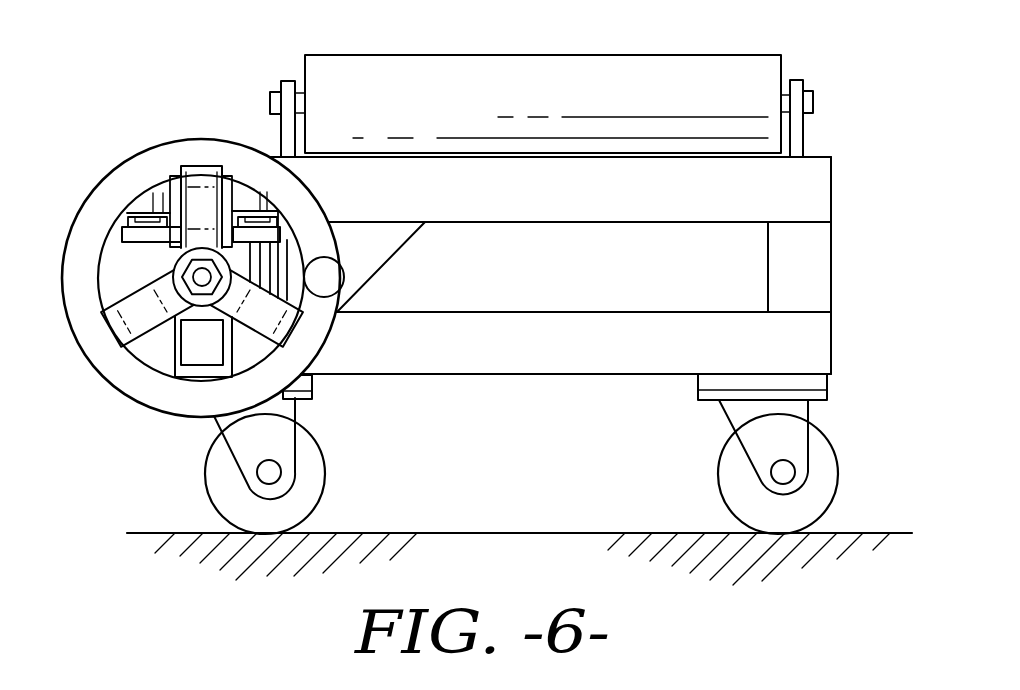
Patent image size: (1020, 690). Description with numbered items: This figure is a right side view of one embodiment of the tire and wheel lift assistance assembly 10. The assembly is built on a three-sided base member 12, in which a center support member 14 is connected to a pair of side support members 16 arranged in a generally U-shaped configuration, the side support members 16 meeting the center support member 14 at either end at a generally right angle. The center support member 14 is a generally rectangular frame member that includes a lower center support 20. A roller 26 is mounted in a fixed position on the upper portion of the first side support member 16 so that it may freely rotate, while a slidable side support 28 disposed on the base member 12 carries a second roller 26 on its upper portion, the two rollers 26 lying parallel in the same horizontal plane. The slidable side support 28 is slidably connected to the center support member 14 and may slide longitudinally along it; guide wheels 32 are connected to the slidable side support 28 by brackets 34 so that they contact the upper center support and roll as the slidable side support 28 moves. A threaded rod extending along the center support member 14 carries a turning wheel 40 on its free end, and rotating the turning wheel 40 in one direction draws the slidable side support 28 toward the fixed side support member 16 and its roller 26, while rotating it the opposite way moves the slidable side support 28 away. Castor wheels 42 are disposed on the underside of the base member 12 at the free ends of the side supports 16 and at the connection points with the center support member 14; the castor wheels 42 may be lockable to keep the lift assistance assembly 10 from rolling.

The tire and wheel lift assistance assembly 10 is at (480, 268).
The base member 12 is at (581, 247).
The center support member 14 is at (197, 337).
The side support member 16 is at (612, 324).
The lower center support 20 is at (197, 352).
The roller 26 is at (657, 53).
The slidable side support 28 is at (833, 183).
The guide wheels 32 is at (143, 202).
The brackets 34 is at (265, 143).
The turning wheel 40 is at (175, 158).
The castor wheels 42 is at (329, 472).